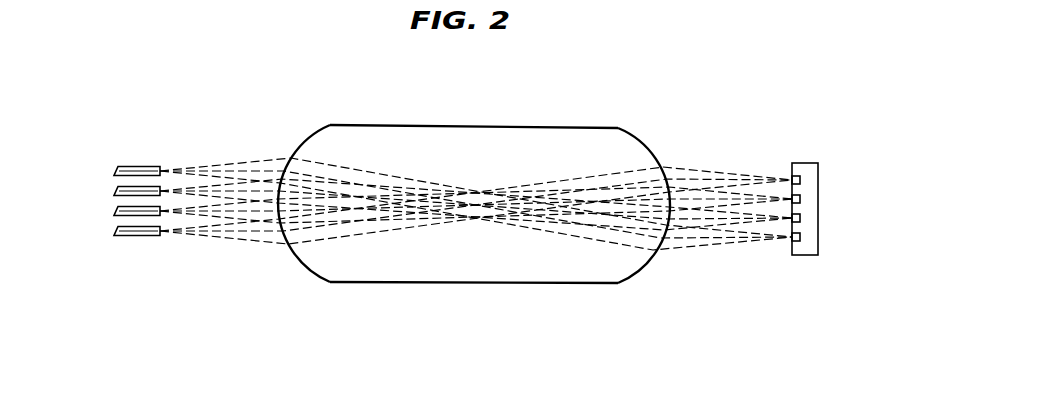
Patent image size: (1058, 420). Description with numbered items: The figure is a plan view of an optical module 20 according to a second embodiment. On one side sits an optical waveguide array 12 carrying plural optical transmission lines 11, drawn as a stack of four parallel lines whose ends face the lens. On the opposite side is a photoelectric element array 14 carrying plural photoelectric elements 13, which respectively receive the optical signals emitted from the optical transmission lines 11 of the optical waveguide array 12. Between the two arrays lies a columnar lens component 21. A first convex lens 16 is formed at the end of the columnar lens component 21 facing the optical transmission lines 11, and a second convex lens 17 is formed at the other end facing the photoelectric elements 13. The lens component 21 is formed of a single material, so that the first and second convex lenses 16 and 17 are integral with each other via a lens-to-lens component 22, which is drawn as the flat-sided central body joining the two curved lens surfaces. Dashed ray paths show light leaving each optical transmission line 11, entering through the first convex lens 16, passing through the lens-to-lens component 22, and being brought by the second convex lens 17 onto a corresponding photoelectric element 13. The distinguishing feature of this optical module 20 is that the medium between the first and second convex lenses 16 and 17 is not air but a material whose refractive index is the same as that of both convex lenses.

The optical transmission line 11 is at (131, 172).
The optical waveguide array 12 is at (122, 165).
The photoelectric element 13 is at (788, 181).
The photoelectric element array 14 is at (807, 160).
The first convex lens 16 is at (319, 147).
The second convex lens 17 is at (630, 268).
The optical module 20 is at (592, 81).
The columnar lens component 21 is at (661, 129).
The lens-to-lens component 22 is at (458, 133).